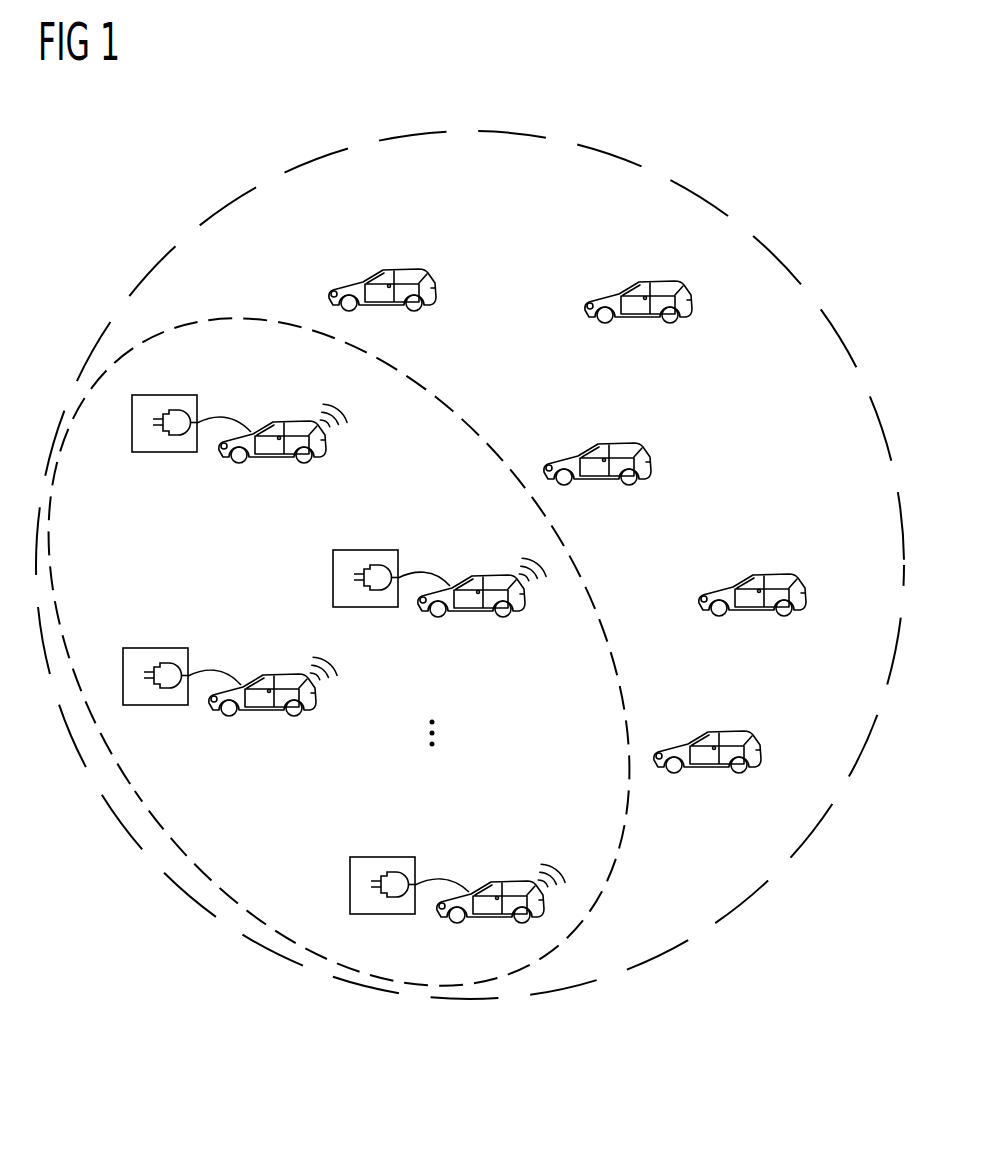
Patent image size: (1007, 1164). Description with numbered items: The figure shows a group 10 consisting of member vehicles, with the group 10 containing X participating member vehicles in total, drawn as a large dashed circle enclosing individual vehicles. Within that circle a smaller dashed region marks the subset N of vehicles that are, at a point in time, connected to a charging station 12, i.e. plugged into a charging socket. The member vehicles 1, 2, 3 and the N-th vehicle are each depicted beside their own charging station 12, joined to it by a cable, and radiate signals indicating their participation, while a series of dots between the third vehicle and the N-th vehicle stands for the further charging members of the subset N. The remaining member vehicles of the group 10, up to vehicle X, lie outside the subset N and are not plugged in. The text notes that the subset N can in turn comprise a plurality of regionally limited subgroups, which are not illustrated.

The member vehicle 1 is at (278, 421).
The member vehicle 2 is at (480, 574).
The member vehicle 3 is at (270, 673).
The subset of member vehicles N is at (621, 850).
The participating member vehicles X is at (757, 743).
The group 10 is at (823, 820).
The charging station 12 is at (165, 452).